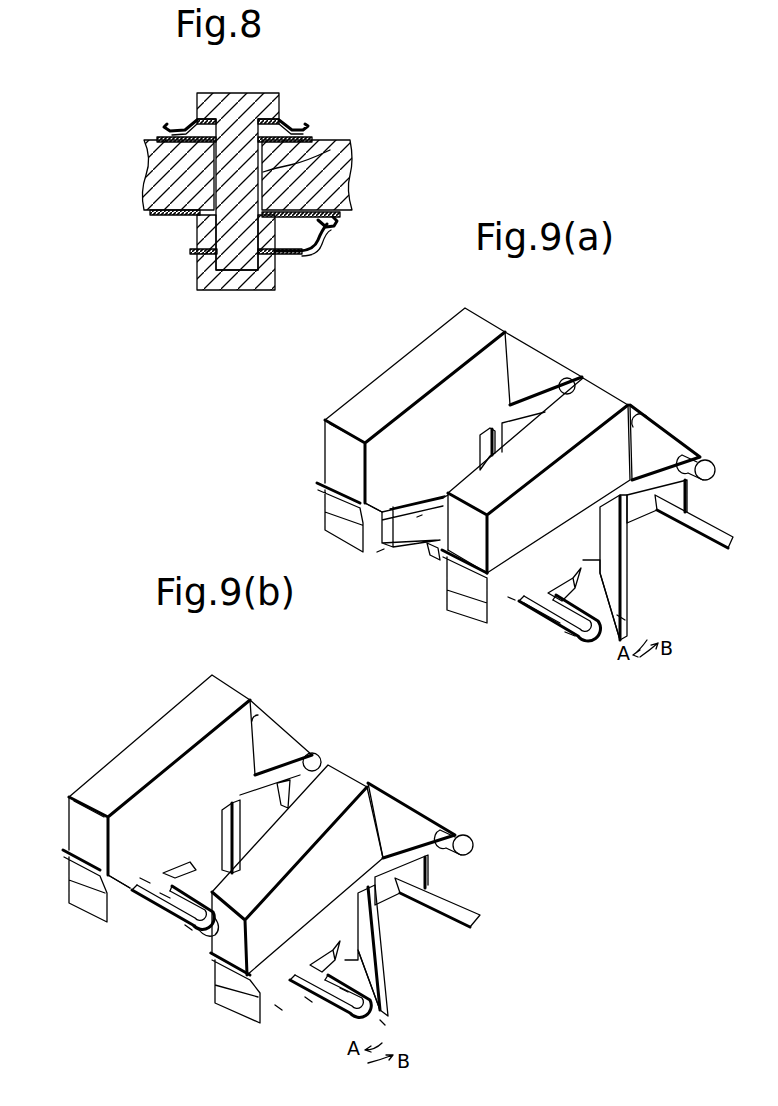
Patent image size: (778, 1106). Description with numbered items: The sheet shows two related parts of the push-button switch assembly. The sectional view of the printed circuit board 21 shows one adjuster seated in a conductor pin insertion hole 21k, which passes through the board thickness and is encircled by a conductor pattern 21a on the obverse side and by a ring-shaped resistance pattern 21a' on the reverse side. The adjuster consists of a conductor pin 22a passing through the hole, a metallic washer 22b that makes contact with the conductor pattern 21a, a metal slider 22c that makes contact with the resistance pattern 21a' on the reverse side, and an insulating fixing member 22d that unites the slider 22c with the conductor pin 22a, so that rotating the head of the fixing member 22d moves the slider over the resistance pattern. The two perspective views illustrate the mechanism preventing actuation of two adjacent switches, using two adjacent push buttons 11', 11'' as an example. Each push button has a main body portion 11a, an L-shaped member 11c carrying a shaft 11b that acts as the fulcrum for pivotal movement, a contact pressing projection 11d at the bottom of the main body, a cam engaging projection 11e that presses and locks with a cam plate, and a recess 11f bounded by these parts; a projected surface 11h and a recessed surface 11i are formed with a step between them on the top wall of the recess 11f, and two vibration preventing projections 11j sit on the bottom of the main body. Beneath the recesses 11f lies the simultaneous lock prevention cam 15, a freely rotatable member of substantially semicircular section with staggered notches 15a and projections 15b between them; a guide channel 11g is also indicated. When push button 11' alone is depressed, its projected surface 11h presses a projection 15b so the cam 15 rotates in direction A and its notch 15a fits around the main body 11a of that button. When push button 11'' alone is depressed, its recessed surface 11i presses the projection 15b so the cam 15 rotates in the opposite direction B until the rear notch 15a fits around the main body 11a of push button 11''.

In FIG. 8, the printed circuit board 21 is at (336, 184).
In FIG. 8, the conductor pattern 21a is at (252, 125).
In FIG. 8, the resistance pattern 21a' is at (275, 233).
In FIG. 8, the conductor pin insertion hole 21k is at (330, 150).
In FIG. 8, the conductor pin 22a is at (245, 128).
In FIG. 8, the metallic washer 22b is at (196, 125).
In FIG. 8, the slider 22c is at (322, 257).
In FIG. 8, the fixing member 22d is at (199, 279).
In FIG. 9A, the push button 11'' is at (423, 398).
In FIG. 9B, the push button 11'' is at (175, 771).
In FIG. 9A, the push button 11' is at (549, 461).
In FIG. 9B, the push button 11' is at (303, 861).
In FIG. 9A, the main body portion 11a is at (380, 395).
In FIG. 9B, the main body portion 11a is at (112, 773).
In FIG. 9A, the shaft 11b is at (577, 380).
In FIG. 9B, the shaft 11b is at (325, 753).
In FIG. 9A, the L-shaped member 11c is at (540, 368).
In FIG. 9B, the L-shaped member 11c is at (285, 735).
In FIG. 9A, the contact pressing projection 11d is at (588, 560).
In FIG. 9B, the contact pressing projection 11d is at (205, 867).
In FIG. 9A, the cam engaging projection 11e is at (320, 488).
In FIG. 9B, the cam engaging projection 11e is at (66, 857).
In FIG. 9A, the recess 11f is at (416, 504).
In FIG. 9B, the recess 11f is at (282, 993).
In FIG. 9A, the channel 11g is at (418, 505).
In FIG. 9A, the projected surface 11h is at (547, 573).
In FIG. 9B, the projected surface 11h is at (170, 920).
In FIG. 9A, the recessed surface 11i is at (377, 552).
In FIG. 9B, the recessed surface 11i is at (143, 877).
In FIG. 9A, the vibration preventing projection 11j is at (485, 430).
In FIG. 9B, the vibration preventing projection 11j is at (232, 803).
In FIG. 9A, the simultaneous lock prevention cam 15 is at (590, 643).
In FIG. 9B, the simultaneous lock prevention cam 15 is at (338, 1023).
In FIG. 9A, the notch 15a is at (420, 517).
In FIG. 9B, the notch 15a is at (165, 895).
In FIG. 9A, the projection 15b is at (427, 558).
In FIG. 9B, the projection 15b is at (188, 928).